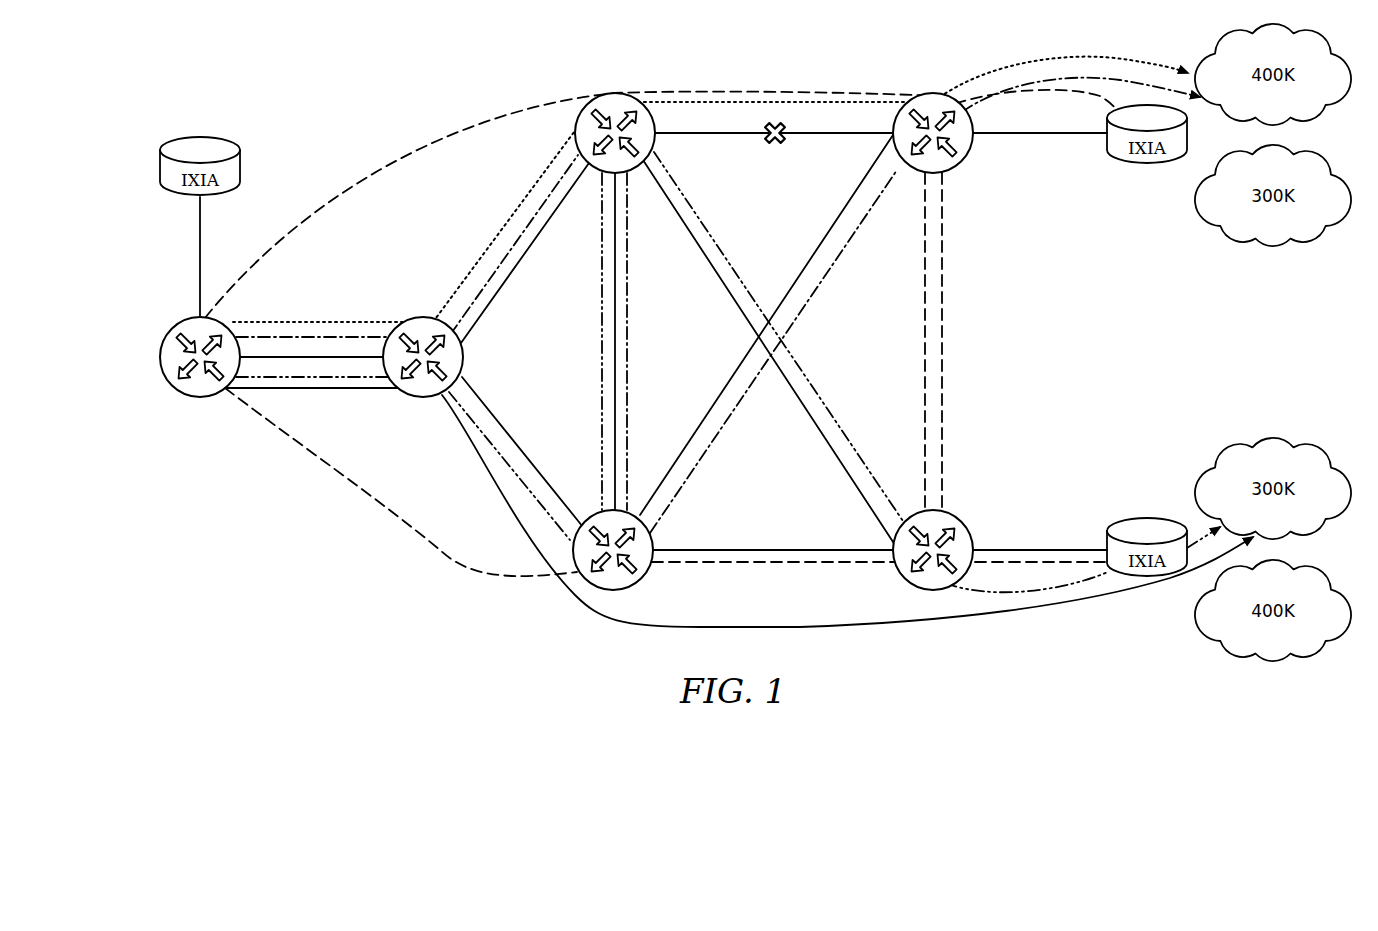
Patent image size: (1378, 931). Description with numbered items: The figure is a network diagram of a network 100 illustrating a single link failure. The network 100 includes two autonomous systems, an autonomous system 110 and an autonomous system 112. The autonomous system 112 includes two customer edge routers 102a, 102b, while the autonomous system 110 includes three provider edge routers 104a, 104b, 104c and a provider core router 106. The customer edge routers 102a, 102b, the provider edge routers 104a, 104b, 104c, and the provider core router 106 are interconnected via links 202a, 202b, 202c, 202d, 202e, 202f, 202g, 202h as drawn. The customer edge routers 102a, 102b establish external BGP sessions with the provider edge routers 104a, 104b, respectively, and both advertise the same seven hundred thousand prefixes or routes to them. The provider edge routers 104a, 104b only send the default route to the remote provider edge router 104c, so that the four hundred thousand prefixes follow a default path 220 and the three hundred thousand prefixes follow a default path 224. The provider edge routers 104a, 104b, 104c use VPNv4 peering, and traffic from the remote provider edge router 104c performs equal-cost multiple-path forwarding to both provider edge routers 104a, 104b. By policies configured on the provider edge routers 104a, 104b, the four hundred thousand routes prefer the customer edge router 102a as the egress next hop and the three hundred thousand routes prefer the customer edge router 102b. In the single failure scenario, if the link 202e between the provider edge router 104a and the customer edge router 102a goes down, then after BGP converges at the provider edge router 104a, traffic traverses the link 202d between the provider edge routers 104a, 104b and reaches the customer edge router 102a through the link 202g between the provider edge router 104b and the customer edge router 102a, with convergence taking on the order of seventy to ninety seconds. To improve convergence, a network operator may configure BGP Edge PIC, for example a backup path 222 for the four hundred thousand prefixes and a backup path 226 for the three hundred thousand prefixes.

The network 100 is at (268, 28).
The customer edge router 102a is at (966, 162).
The customer edge router 102b is at (964, 517).
The provider edge router 104a is at (602, 98).
The provider edge router 104b is at (642, 586).
The remote provider edge router 104c is at (190, 397).
The provider core router 106 is at (464, 355).
The autonomous system 110 is at (898, 341).
The autonomous system 112 is at (968, 341).
The link 202a is at (322, 355).
The link 202b is at (508, 420).
The link 202c is at (506, 284).
The link 202d is at (629, 298).
The link 202e is at (714, 140).
The link 202f is at (802, 548).
The link 202g is at (820, 266).
The link 202h is at (820, 426).
The default path 220 is at (466, 270).
The backup path 222 is at (630, 352).
The default path 224 is at (864, 628).
The backup path 226 is at (598, 270).